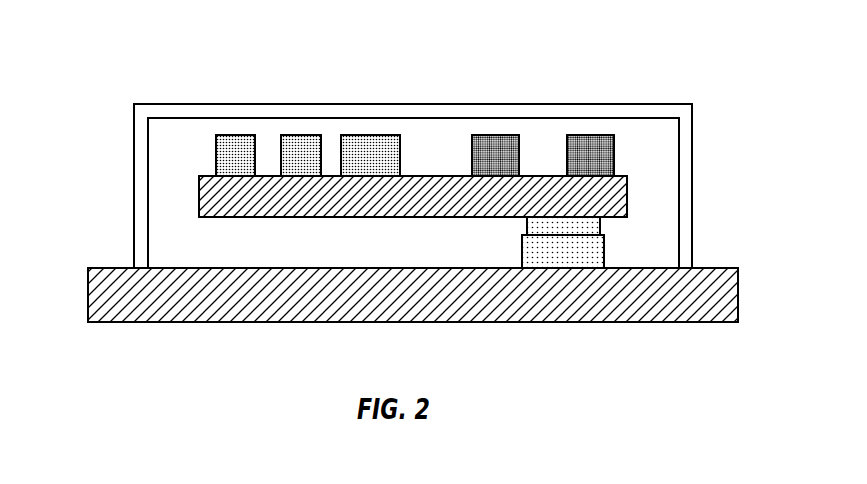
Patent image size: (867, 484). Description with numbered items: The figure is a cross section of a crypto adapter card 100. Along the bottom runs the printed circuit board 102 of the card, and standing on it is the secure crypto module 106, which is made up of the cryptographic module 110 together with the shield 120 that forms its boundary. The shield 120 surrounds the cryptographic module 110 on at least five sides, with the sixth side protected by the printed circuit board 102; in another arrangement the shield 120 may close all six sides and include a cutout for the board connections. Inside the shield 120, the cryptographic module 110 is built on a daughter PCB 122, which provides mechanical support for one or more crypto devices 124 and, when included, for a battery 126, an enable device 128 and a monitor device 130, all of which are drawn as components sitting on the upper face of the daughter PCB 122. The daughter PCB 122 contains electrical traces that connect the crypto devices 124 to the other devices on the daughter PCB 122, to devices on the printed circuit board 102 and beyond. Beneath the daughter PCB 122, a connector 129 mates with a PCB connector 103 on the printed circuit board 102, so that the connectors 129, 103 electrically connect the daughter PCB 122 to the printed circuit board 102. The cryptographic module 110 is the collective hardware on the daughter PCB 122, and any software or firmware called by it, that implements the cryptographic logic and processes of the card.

The crypto adapter card 100 is at (692, 31).
The printed circuit board 102 is at (722, 293).
The PCB connector 103 is at (547, 260).
The secure crypto module 106 is at (127, 92).
The cryptographic module 110 is at (694, 85).
The shield 120 is at (685, 162).
The daughter PCB 122 is at (609, 203).
The crypto devices 124 is at (490, 158).
The battery 126 is at (232, 155).
The enable device 128 is at (378, 155).
The connector 129 is at (578, 228).
The monitor device 130 is at (297, 155).